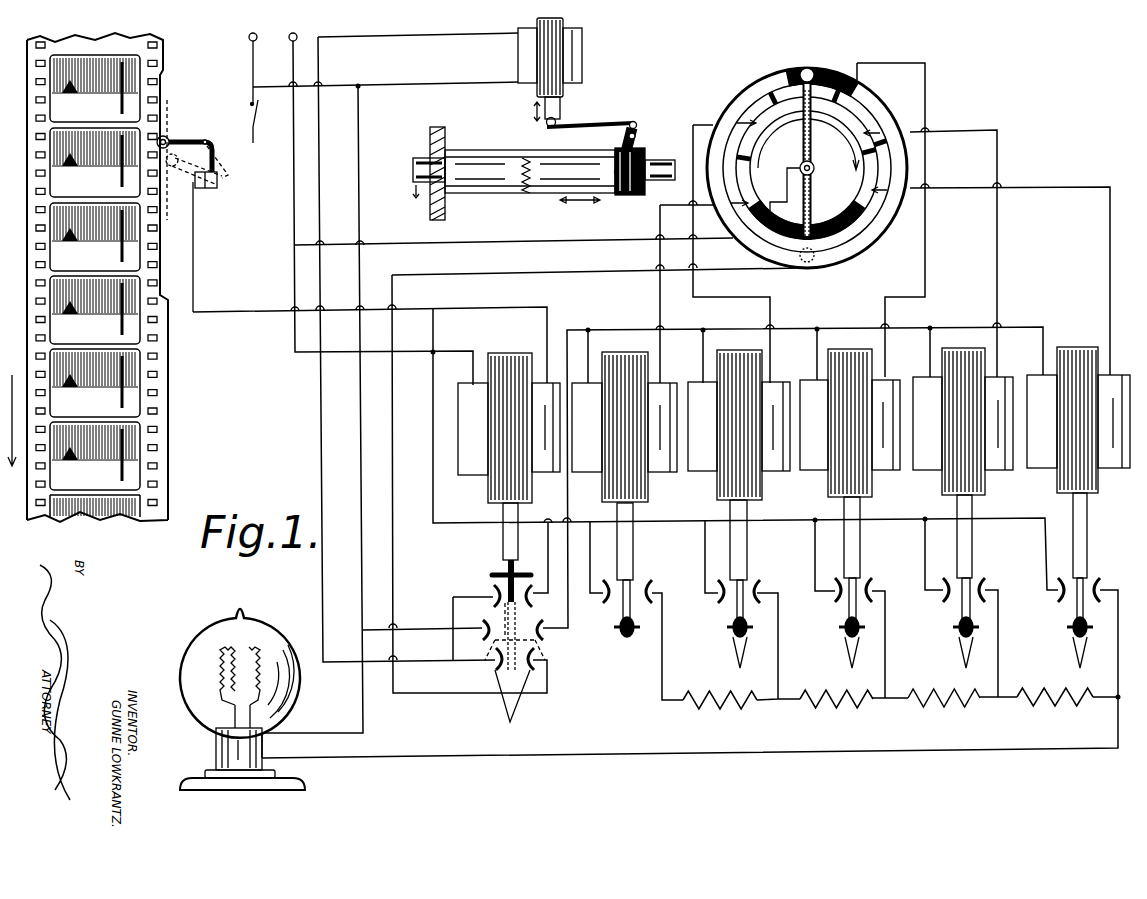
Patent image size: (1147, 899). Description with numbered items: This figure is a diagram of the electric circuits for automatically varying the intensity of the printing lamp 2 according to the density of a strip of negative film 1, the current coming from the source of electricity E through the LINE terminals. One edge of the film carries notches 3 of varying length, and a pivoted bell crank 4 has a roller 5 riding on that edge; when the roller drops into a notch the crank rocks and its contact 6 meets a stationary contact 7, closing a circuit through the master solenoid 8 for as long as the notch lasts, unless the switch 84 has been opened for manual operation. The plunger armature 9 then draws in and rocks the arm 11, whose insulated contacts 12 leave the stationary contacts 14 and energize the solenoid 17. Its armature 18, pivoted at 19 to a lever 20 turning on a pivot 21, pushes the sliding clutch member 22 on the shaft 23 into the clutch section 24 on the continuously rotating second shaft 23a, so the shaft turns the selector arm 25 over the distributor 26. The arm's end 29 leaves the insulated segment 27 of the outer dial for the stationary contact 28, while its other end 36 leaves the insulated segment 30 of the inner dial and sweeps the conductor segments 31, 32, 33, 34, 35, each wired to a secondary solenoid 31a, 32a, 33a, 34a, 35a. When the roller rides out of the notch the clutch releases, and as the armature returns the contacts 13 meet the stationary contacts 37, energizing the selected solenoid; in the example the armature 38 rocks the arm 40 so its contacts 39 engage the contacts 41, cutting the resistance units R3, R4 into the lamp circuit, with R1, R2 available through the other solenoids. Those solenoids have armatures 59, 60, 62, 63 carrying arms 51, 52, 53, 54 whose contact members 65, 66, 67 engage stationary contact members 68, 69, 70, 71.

The negative film 1 is at (163, 415).
The printing lamp 2 is at (200, 695).
The notch 3 is at (158, 95).
The bell crank 4 is at (195, 137).
The roller 5 is at (165, 135).
The contact 6 is at (212, 186).
The stationary contact 7 is at (200, 187).
The master solenoid 8 is at (500, 358).
The plunger armature 9 is at (508, 530).
The arm 11 is at (503, 572).
The contacts 12 is at (492, 606).
The contacts 13 is at (493, 582).
The stationary contacts 14 is at (512, 706).
The solenoid 17 is at (555, 57).
The armature 18 is at (558, 105).
The pivot 19 is at (543, 123).
The lever 20 is at (580, 124).
The pivot 21 is at (640, 130).
The sliding clutch member 22 is at (567, 173).
The shaft 23 is at (660, 182).
The second shaft 23a is at (415, 172).
The clutch section 24 is at (500, 175).
The selector arm 25 is at (810, 133).
The distributor 26 is at (847, 187).
The insulated segment 27 is at (825, 62).
The stationary contact 28 is at (865, 247).
The end 29 is at (805, 70).
The insulated segment 30 is at (830, 250).
The conductor segment 31 is at (730, 168).
The secondary solenoid 31a is at (615, 352).
The conductor segment 32 is at (758, 113).
The secondary solenoid 32a is at (735, 352).
The conductor segment 33 is at (785, 95).
The secondary solenoid 33a is at (850, 348).
The conductor segment 34 is at (865, 133).
The secondary solenoid 34a is at (960, 348).
The conductor segment 35 is at (870, 200).
The secondary solenoid 35a is at (1070, 350).
The end 36 is at (810, 265).
The stationary contacts 37 is at (482, 632).
The armature 38 is at (858, 545).
The contacts 39 is at (854, 662).
The arm 40 is at (860, 612).
The contacts 41 is at (872, 585).
The arm 51 is at (631, 614).
The arm 52 is at (746, 613).
The arm 53 is at (972, 612).
The arm 54 is at (1088, 612).
The plunger armature 59 is at (627, 558).
The armature 60 is at (745, 552).
The armature 62 is at (970, 548).
The armature 63 is at (1080, 540).
The contact member 65 is at (742, 662).
The contact member 66 is at (968, 661).
The contact member 67 is at (1081, 660).
The stationary contact member 68 is at (652, 590).
The stationary contact member 69 is at (757, 590).
The stationary contact member 70 is at (985, 585).
The stationary contact member 71 is at (1100, 585).
The switch 84 is at (255, 103).
The source of electricity E is at (256, 41).
The line LINE is at (273, 38).
The resistance unit R1 is at (722, 705).
The resistance unit R2 is at (843, 702).
The resistance unit R3 is at (945, 700).
The resistance unit R4 is at (1052, 698).